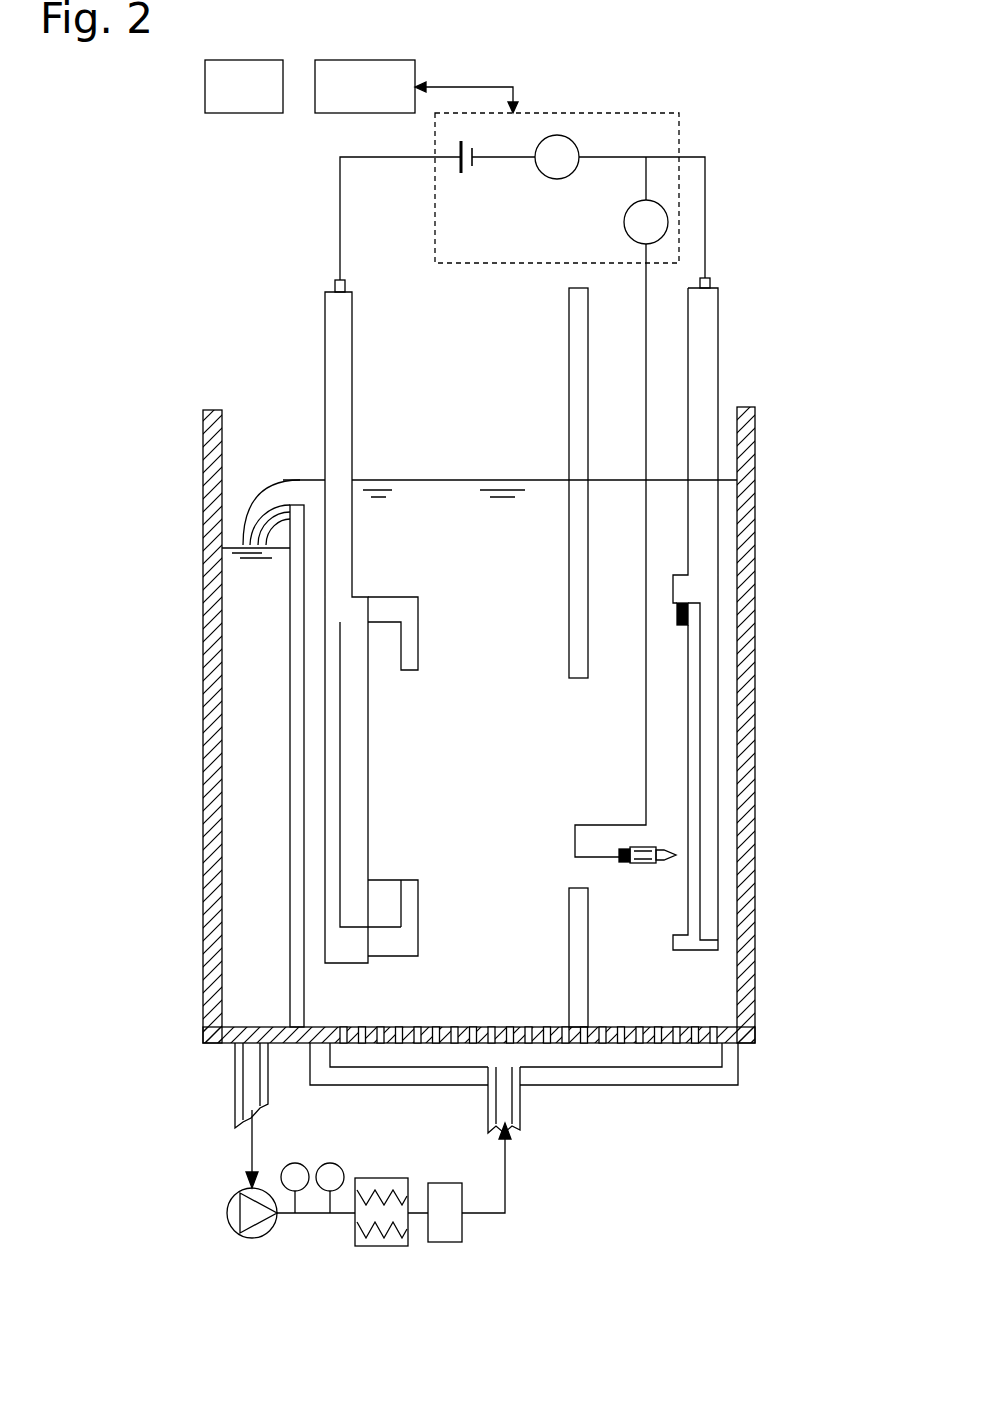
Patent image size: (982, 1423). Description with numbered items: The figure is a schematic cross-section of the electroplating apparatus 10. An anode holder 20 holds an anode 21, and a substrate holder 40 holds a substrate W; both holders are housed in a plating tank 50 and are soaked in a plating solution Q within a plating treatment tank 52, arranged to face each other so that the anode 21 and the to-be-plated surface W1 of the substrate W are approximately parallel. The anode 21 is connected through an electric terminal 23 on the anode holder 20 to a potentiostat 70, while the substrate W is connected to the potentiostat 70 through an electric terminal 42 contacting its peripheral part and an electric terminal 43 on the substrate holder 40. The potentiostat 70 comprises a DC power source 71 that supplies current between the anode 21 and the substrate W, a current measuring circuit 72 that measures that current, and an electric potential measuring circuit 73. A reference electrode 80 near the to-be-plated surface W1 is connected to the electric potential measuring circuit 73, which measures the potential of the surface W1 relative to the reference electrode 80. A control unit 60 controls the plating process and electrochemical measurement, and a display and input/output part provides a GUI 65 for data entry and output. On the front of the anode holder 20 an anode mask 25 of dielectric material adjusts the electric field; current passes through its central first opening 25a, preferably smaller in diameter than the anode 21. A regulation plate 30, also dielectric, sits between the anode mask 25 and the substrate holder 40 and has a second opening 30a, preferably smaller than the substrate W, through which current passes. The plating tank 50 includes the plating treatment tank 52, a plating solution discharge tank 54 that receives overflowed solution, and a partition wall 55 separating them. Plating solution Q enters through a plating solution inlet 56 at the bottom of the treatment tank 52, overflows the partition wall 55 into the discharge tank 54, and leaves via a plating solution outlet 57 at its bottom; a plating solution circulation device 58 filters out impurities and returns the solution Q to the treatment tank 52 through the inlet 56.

The electroplating apparatus 10 is at (156, 219).
The anode holder 20 is at (309, 603).
The anode 21 is at (352, 800).
The electric terminal 23 is at (333, 284).
The anode mask 25 is at (410, 641).
The first opening 25a is at (408, 713).
The regulation plate 30 is at (569, 445).
The second opening 30a is at (575, 792).
The substrate holder 40 is at (745, 600).
The electric terminal 42 is at (683, 603).
The electric terminal 43 is at (710, 279).
The plating tank 50 is at (495, 770).
The plating treatment tank 52 is at (755, 820).
The plating solution discharge tank 54 is at (203, 882).
The partition wall 55 is at (300, 626).
The plating solution inlet 56 is at (502, 1060).
The plating solution outlet 57 is at (250, 1030).
The plating solution circulation device 58 is at (306, 1252).
The control unit 60 is at (368, 60).
The GUI 65 is at (246, 60).
The potentiostat 70 is at (557, 452).
The DC power source 71 is at (464, 177).
The current measuring circuit 72 is at (560, 135).
The electric potential measuring circuit 73 is at (670, 220).
The reference electrode 80 is at (658, 870).
The substrate W is at (700, 683).
The to-be-plated surface W1 is at (680, 647).
The plating solution Q is at (418, 492).